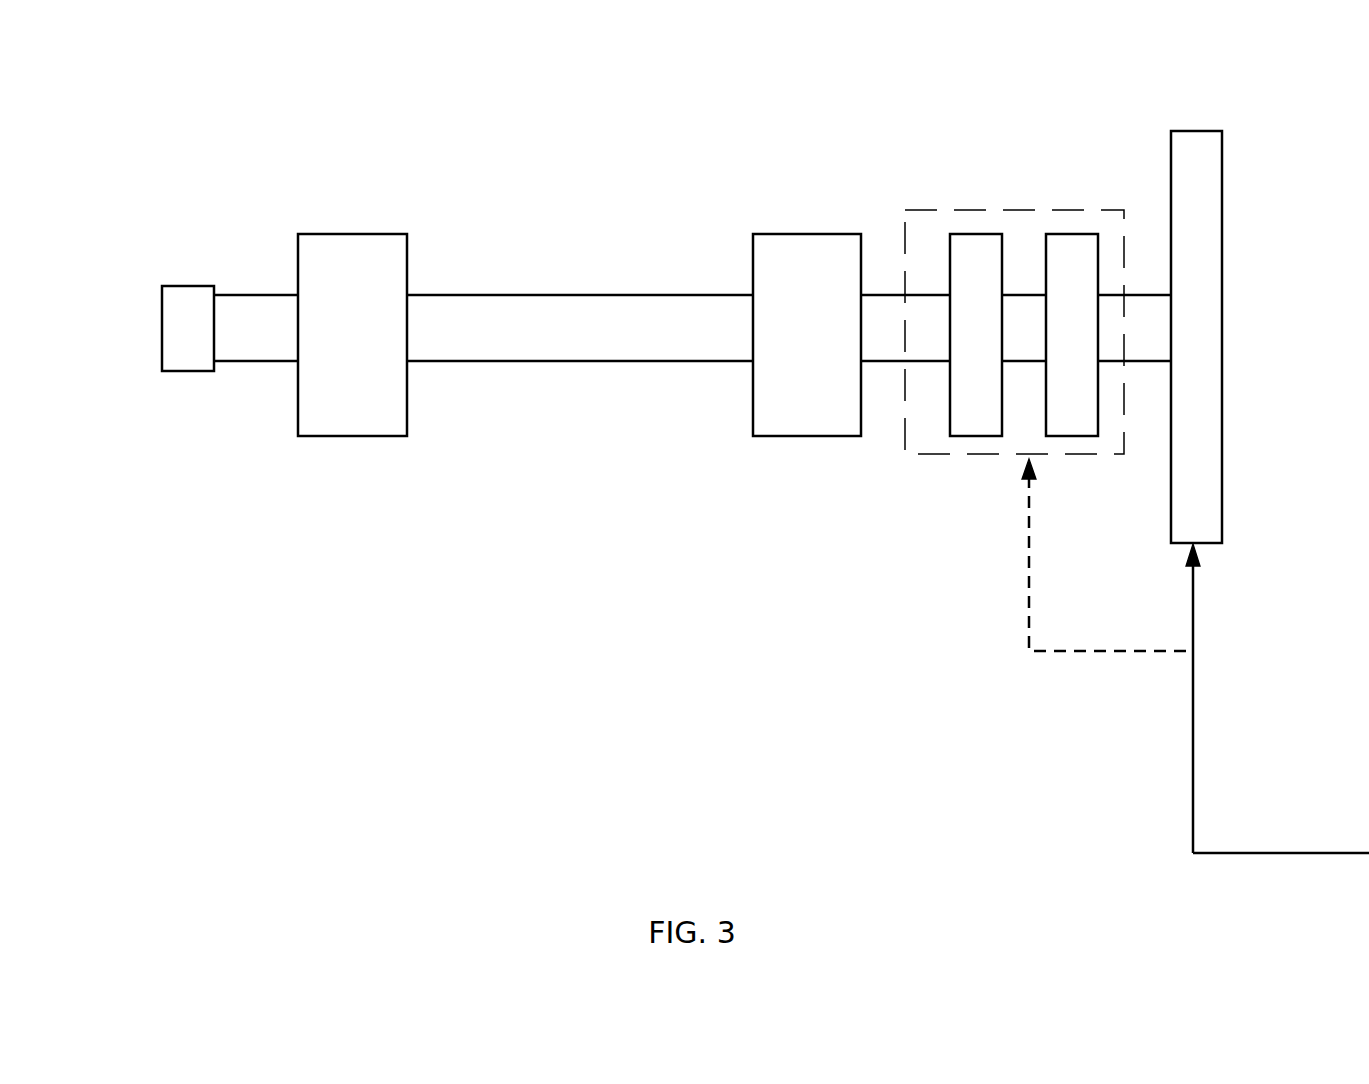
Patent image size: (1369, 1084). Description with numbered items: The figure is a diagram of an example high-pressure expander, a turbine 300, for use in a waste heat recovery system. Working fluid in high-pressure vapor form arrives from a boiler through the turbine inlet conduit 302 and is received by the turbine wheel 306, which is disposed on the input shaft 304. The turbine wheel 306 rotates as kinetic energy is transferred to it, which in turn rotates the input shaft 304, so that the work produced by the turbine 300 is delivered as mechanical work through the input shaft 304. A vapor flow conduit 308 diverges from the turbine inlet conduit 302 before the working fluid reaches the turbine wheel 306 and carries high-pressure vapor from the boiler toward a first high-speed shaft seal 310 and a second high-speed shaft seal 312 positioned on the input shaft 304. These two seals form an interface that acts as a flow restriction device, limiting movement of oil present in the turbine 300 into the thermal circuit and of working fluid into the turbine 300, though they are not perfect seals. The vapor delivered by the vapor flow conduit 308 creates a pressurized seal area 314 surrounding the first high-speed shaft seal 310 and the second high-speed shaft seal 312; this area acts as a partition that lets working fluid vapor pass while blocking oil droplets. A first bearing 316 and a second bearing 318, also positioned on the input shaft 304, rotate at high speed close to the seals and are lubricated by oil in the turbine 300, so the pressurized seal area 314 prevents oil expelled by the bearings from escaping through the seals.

The turbine 300 is at (126, 139).
The turbine inlet conduit 302 is at (1195, 622).
The input shaft 304 is at (655, 362).
The turbine wheel 306 is at (1170, 173).
The vapor flow conduit 308 is at (1028, 586).
The first high-speed shaft seal 310 is at (948, 257).
The second high-speed shaft seal 312 is at (1043, 240).
The pressurized seal area 314 is at (930, 460).
The first bearing 316 is at (297, 262).
The second bearing 318 is at (752, 258).